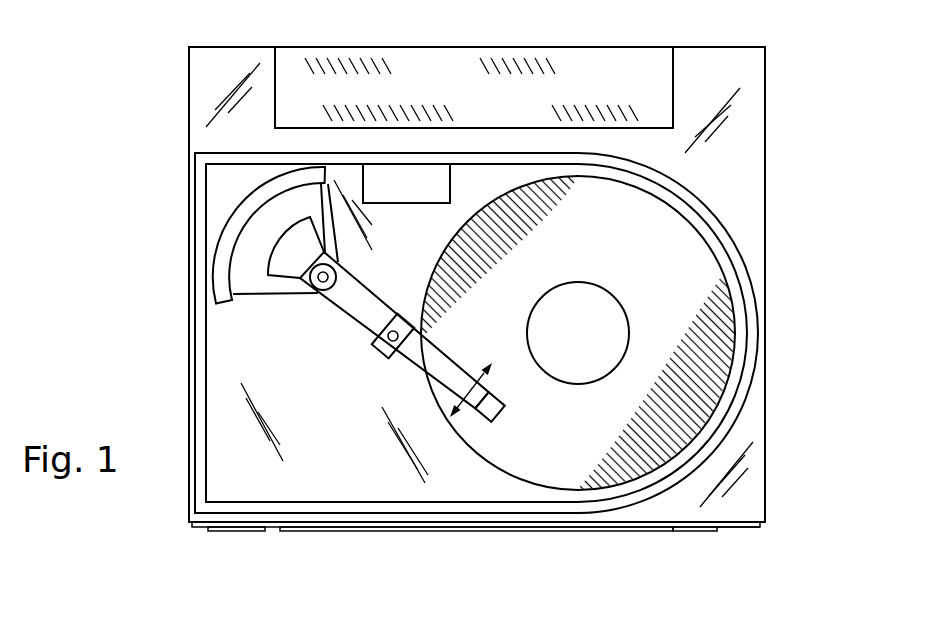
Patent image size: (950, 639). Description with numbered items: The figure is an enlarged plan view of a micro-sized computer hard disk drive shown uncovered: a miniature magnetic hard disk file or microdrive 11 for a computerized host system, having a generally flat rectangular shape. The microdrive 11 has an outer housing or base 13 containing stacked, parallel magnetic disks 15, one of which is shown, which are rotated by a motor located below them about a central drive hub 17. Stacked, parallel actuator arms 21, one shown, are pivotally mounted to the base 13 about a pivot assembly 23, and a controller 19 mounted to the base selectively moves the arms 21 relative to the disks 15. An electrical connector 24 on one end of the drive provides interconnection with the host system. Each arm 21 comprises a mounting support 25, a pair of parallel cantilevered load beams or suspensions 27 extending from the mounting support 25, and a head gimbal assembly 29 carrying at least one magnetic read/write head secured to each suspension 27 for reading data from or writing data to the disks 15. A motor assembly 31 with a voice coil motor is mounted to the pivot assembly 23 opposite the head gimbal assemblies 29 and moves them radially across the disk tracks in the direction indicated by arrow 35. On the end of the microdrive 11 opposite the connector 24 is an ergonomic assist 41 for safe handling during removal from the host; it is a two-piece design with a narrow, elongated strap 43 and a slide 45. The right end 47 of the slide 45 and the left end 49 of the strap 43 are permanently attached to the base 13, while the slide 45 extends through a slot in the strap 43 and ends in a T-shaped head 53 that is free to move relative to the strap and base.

The microdrive 11 is at (812, 157).
The base 13 is at (765, 102).
The magnetic disks 15 is at (700, 263).
The central drive hub 17 is at (630, 336).
The controller 19 is at (411, 182).
The actuator arms 21 is at (348, 349).
The pivot assembly 23 is at (323, 278).
The electrical connector 24 is at (598, 62).
The mounting support 25 is at (362, 280).
The suspensions 27 is at (432, 347).
The head gimbal assembly 29 is at (503, 420).
The motor assembly 31 is at (262, 240).
The arrow 35 is at (498, 372).
The ergonomic assist 41 is at (482, 546).
The strap 43 is at (548, 531).
The slide 45 is at (280, 531).
The right end of slide 47 is at (738, 527).
The left end of strap 49 is at (200, 523).
The T-shaped head 53 is at (238, 531).